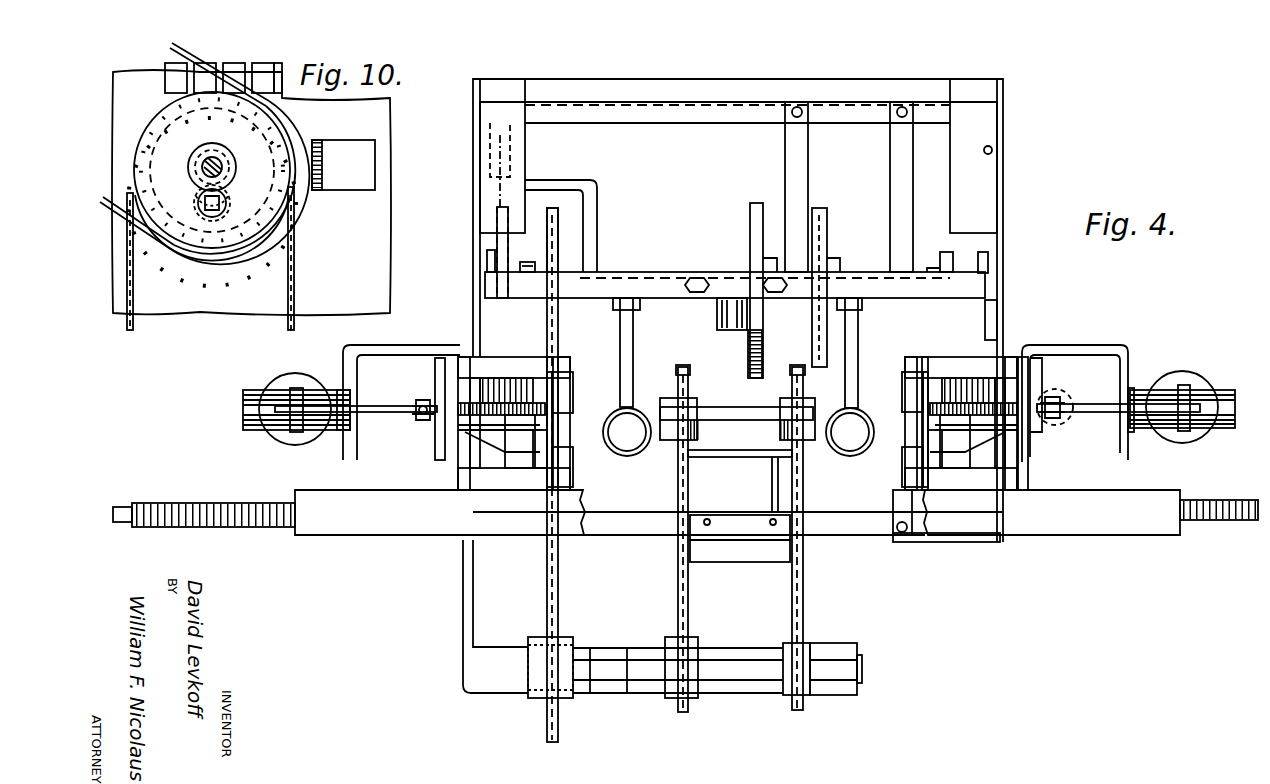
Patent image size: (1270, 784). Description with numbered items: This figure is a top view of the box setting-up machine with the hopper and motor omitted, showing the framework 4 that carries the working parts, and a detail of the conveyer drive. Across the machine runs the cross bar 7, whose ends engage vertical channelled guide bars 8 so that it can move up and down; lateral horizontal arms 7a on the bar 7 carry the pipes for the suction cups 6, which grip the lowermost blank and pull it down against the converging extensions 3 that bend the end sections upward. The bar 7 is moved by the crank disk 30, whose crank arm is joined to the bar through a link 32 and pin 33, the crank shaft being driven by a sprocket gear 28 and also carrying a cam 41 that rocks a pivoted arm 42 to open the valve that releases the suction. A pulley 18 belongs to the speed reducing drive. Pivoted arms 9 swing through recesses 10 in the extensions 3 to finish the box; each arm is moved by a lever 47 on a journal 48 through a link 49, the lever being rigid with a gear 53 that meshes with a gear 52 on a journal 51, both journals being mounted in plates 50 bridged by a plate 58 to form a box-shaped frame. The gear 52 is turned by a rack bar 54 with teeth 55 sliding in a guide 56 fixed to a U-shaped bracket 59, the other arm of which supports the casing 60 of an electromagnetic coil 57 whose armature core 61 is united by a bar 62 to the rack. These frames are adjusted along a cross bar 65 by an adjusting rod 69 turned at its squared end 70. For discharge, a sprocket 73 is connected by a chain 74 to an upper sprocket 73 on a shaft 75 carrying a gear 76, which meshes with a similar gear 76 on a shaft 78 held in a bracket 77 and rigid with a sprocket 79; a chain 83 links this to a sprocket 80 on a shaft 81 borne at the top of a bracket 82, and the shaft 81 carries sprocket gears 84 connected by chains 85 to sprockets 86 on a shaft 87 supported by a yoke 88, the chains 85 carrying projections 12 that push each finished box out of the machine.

In FIG. 4, the framework 4 is at (498, 82).
In FIG. 10, the sprocket 73 is at (198, 272).
In FIG. 4, the sprocket 73 is at (495, 168).
In FIG. 10, the bracket 77 is at (345, 190).
In FIG. 4, the bracket 77 is at (592, 196).
In FIG. 10, the chain 74 is at (132, 280).
In FIG. 4, the chain 74 is at (497, 215).
In FIG. 10, the vertical channelled guide bar 8 is at (240, 64).
In FIG. 4, the vertical channelled guide bar 8 is at (487, 258).
In FIG. 4, the pulley 18 is at (525, 262).
In FIG. 10, the sprocket 79 is at (175, 112).
In FIG. 4, the sprocket 79 is at (558, 230).
In FIG. 4, the cross bar 7 is at (640, 272).
In FIG. 4, the crank disk 30 is at (750, 218).
In FIG. 4, the sprocket gear 28 is at (827, 225).
In FIG. 4, the cam 41 is at (942, 252).
In FIG. 4, the pivoted arm 42 is at (990, 325).
In FIG. 4, the pin 33 is at (717, 310).
In FIG. 4, the link 32 is at (748, 358).
In FIG. 4, the lateral horizontal arm 7a is at (633, 330).
In FIG. 4, the suction cup 6 is at (640, 445).
In FIG. 10, the chain 83 is at (195, 56).
In FIG. 4, the chain 83 is at (558, 575).
In FIG. 4, the sprocket 80 is at (553, 742).
In FIG. 4, the shaft 81 is at (630, 690).
In FIG. 4, the sprocket gear 84 is at (800, 705).
In FIG. 4, the bracket 82 is at (468, 600).
In FIG. 4, the cross bar 65 is at (330, 520).
In FIG. 4, the adjusting rod 69 is at (185, 503).
In FIG. 4, the squared end 70 is at (123, 505).
In FIG. 4, the electromagnetic coil 57 is at (270, 383).
In FIG. 4, the armature core 61 is at (290, 428).
In FIG. 4, the frame or casing 60 is at (340, 432).
In FIG. 4, the bar 62 is at (370, 408).
In FIG. 4, the bracket 59 is at (348, 355).
In FIG. 4, the plate 50 is at (480, 360).
In FIG. 4, the gear 52 is at (500, 400).
In FIG. 4, the gear 53 is at (510, 380).
In FIG. 4, the journal 51 is at (492, 488).
In FIG. 4, the lever 47 is at (480, 440).
In FIG. 4, the journal 48 is at (515, 470).
In FIG. 4, the link 49 is at (530, 452).
In FIG. 4, the plate 58 is at (455, 487).
In FIG. 4, the recess 10 is at (573, 398).
In FIG. 4, the converging extension 3 is at (573, 470).
In FIG. 4, the pivoted arm 9 is at (562, 435).
In FIG. 4, the rack bar 54 is at (423, 418).
In FIG. 4, the teeth 55 is at (1050, 395).
In FIG. 4, the guide 56 is at (420, 412).
In FIG. 4, the chain 85 is at (690, 590).
In FIG. 4, the sprocket 86 is at (688, 370).
In FIG. 4, the shaft 87 is at (730, 407).
In FIG. 4, the yoke 88 is at (740, 452).
In FIG. 4, the projection 12 is at (720, 518).
In FIG. 10, the shaft 78 is at (195, 165).
In FIG. 10, the shaft 75 is at (230, 200).
In FIG. 10, the gear 76 is at (192, 200).